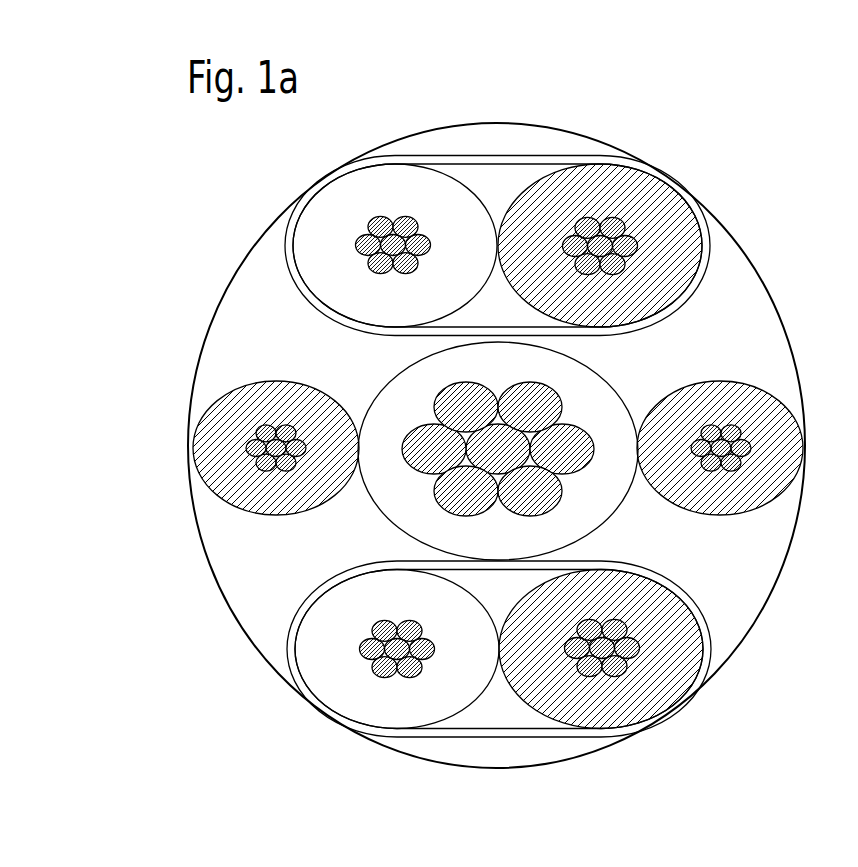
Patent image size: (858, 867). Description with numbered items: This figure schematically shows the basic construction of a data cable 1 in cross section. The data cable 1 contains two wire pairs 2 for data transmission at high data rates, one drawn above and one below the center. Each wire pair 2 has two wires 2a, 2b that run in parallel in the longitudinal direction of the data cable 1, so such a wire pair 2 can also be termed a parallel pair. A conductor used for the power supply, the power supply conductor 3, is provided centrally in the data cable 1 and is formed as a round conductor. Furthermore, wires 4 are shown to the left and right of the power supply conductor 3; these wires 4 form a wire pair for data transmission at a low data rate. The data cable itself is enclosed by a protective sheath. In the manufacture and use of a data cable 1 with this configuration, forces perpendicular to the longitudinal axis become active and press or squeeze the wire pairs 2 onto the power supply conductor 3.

The data cable 1 is at (496, 122).
The wire pair 2 is at (705, 270).
The wire 2a is at (306, 276).
The wire 2b is at (665, 302).
The power supply conductor 3 is at (382, 397).
The wires 4 is at (276, 388).